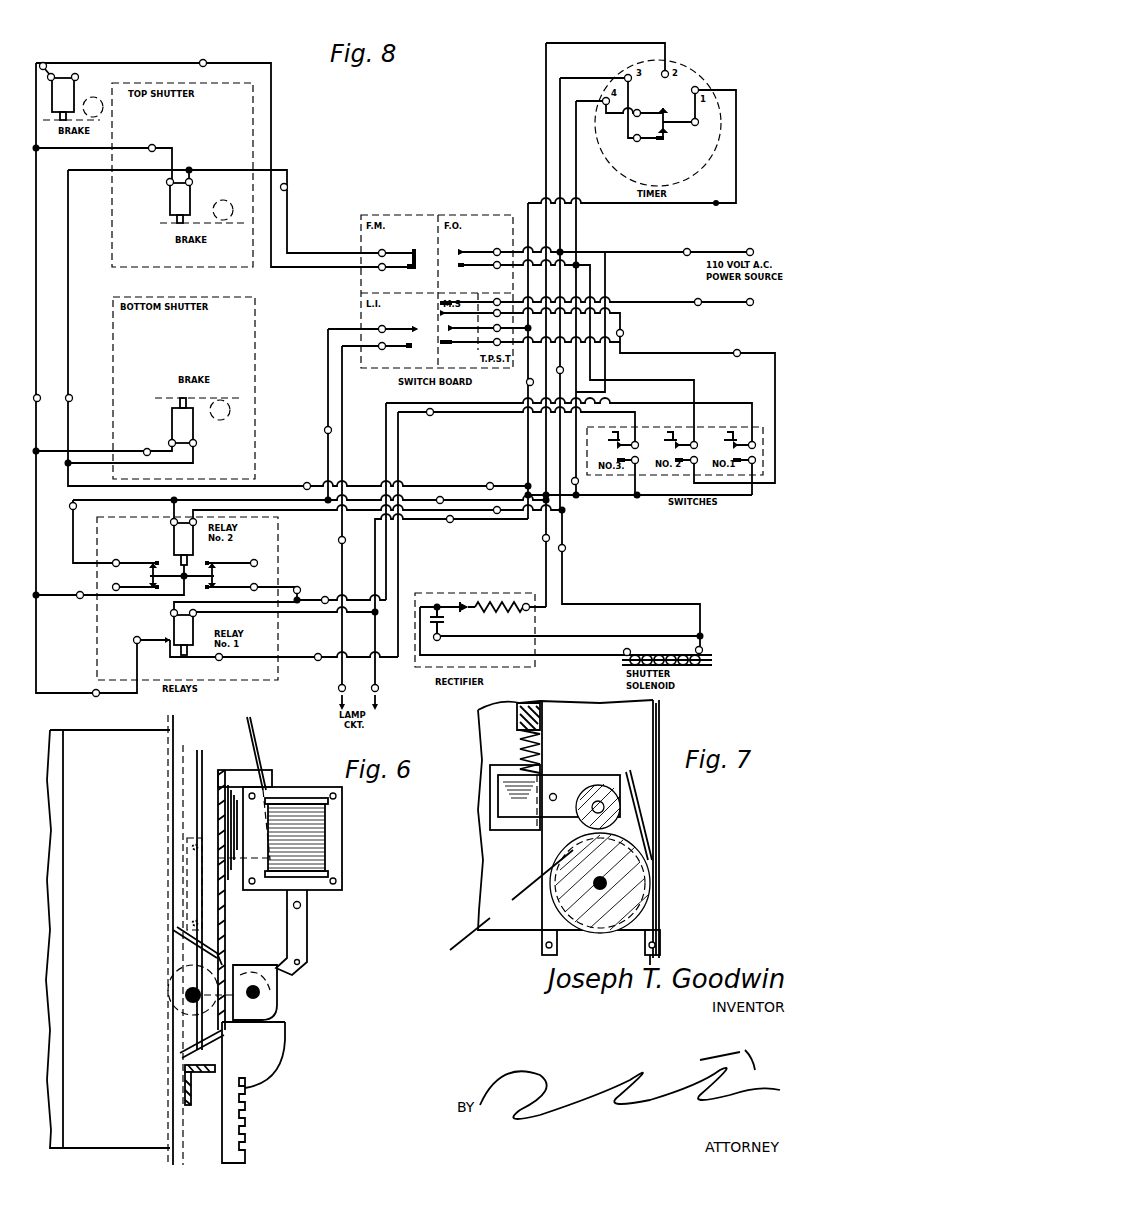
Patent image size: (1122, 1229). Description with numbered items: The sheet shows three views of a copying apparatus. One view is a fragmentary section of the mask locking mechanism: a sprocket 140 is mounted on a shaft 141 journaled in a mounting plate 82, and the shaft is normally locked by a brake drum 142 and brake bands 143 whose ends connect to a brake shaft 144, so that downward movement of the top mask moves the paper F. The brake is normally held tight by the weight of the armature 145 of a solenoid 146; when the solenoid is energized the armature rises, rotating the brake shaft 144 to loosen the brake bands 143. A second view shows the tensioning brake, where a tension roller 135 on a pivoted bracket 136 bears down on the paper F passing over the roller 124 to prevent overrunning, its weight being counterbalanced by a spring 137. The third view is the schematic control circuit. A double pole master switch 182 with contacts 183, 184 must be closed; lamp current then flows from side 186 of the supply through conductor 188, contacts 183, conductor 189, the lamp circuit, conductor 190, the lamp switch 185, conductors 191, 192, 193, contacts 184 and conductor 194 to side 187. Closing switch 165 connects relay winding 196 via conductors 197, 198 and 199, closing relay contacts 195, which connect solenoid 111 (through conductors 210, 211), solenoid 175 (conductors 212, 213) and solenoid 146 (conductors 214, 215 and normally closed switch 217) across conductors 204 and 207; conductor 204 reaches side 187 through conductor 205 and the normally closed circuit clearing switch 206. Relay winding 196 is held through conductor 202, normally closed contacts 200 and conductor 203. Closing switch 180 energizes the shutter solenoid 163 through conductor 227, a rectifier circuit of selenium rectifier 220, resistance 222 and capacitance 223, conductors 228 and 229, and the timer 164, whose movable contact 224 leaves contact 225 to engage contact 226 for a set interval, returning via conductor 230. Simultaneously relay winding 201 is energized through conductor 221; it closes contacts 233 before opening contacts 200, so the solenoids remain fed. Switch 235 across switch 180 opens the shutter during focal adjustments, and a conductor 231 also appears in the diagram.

In FIG. 8, the conductor 214 is at (43, 62).
In FIG. 8, the conductor 215 is at (207, 47).
In FIG. 8, the solenoid 175 is at (90, 71).
In FIG. 8, the conductor 212 is at (158, 134).
In FIG. 8, the solenoid 146 is at (168, 196).
In FIG. 6, the solenoid 146 is at (316, 848).
In FIG. 8, the conductor 213 is at (193, 182).
In FIG. 8, the conductor 207 is at (288, 186).
In FIG. 8, the conductor 204 is at (40, 396).
In FIG. 8, the solenoid 111 is at (193, 432).
In FIG. 8, the conductor 210 is at (154, 438).
In FIG. 8, the conductor 211 is at (193, 463).
In FIG. 8, the conductor 192 is at (70, 504).
In FIG. 8, the relay winding 201 is at (170, 530).
In FIG. 8, the relay contacts 233 is at (140, 553).
In FIG. 8, the relay contacts 200 is at (251, 565).
In FIG. 8, the conductor 202 is at (304, 578).
In FIG. 8, the conductor 198 is at (323, 597).
In FIG. 8, the conductor 203 is at (82, 598).
In FIG. 8, the relay winding 196 is at (194, 628).
In FIG. 8, the relay contacts 195 is at (165, 641).
In FIG. 8, the conductor 197 is at (316, 612).
In FIG. 8, the conductor 205 is at (428, 415).
In FIG. 8, the conductor 191 is at (324, 430).
In FIG. 8, the conductor 190 is at (338, 540).
In FIG. 8, the conductor 189 is at (449, 523).
In FIG. 8, the conductor 221 is at (495, 514).
In FIG. 8, the conductor 227 is at (542, 538).
In FIG. 8, the conductor 228 is at (565, 546).
In FIG. 8, the capacitance 223 is at (434, 610).
In FIG. 8, the selenium rectifier 220 is at (471, 589).
In FIG. 8, the resistance 222 is at (526, 590).
In FIG. 8, the shutter solenoid 163 is at (712, 650).
In FIG. 8, the normally closed switch 217 is at (422, 240).
In FIG. 8, the switch 235 is at (488, 244).
In FIG. 8, the master switch 182 is at (480, 300).
In FIG. 8, the lamp switch 185 is at (410, 321).
In FIG. 8, the contacts 184 is at (454, 319).
In FIG. 8, the contacts 183 is at (442, 345).
In FIG. 8, the timer 164 is at (662, 68).
In FIG. 8, the contact 225 is at (672, 100).
In FIG. 8, the conductor 229 is at (612, 138).
In FIG. 8, the contact 226 is at (662, 142).
In FIG. 8, the movable contact 224 is at (672, 126).
In FIG. 8, the conductor 230 is at (716, 206).
In FIG. 8, the conductor 188 is at (694, 240).
In FIG. 8, the side of supply circuit 186 is at (752, 248).
In FIG. 8, the side of supply circuit 187 is at (753, 304).
In FIG. 8, the conductor 194 is at (700, 305).
In FIG. 8, the conductor 193 is at (623, 332).
In FIG. 8, the conductor 231 is at (743, 341).
In FIG. 8, the circuit clearing switch 206 is at (600, 447).
In FIG. 8, the switch 180 is at (679, 418).
In FIG. 8, the switch 165 is at (739, 418).
In FIG. 8, the conductor 199 is at (673, 497).
In FIG. 6, the armature 145 is at (307, 920).
In FIG. 6, the brake bands 143 is at (249, 985).
In FIG. 6, the brake drum 142 is at (166, 972).
In FIG. 6, the shaft 141 is at (185, 995).
In FIG. 6, the brake shaft 144 is at (285, 1022).
In FIG. 6, the sprocket 140 is at (258, 1055).
In FIG. 6, the mounting plate 82 is at (262, 1052).
In FIG. 7, the spring 137 is at (518, 740).
In FIG. 7, the pivoted bracket 136 is at (580, 775).
In FIG. 7, the tension roller 135 is at (618, 800).
In FIG. 7, the roller 124 is at (648, 890).
In FIG. 6, the paper F is at (170, 778).
In FIG. 7, the paper F is at (470, 936).